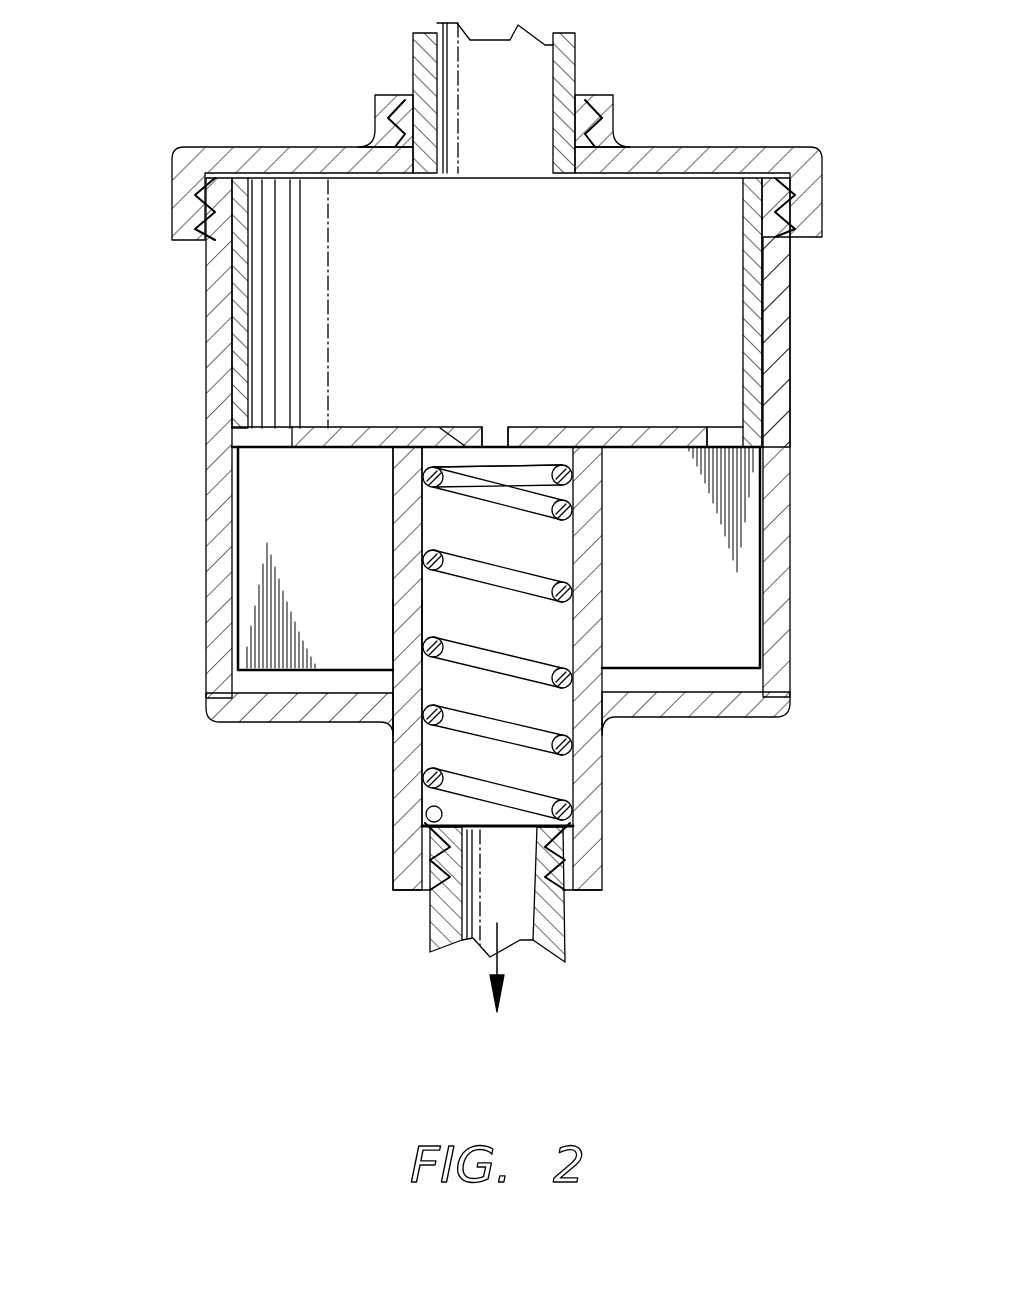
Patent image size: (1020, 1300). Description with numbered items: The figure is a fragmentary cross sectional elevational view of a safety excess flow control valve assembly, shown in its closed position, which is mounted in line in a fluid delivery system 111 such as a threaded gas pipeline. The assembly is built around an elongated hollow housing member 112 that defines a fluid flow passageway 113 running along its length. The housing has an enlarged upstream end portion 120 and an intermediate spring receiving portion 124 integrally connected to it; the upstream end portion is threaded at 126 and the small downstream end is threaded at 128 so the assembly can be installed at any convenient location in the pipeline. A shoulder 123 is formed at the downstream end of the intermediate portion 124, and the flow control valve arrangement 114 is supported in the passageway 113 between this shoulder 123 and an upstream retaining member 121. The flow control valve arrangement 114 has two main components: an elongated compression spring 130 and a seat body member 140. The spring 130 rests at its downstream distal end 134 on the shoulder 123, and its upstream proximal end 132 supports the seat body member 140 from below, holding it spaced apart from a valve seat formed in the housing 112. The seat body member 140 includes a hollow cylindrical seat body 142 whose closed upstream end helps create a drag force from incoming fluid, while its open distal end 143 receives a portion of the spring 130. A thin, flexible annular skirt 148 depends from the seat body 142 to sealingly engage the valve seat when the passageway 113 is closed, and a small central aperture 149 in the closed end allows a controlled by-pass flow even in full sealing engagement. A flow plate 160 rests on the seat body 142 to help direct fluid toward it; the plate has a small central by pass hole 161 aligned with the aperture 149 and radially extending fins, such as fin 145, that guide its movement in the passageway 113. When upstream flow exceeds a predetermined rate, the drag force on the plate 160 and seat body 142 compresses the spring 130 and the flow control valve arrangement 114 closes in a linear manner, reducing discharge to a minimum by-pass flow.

The fluid delivery system 111 is at (565, 66).
The threads 126 is at (593, 128).
The upstream retaining member 121 is at (238, 248).
The enlarged upstream end portion 120 is at (777, 310).
The by pass hole 161 is at (497, 436).
The flow plate 160 is at (627, 427).
The aperture 149 is at (452, 445).
The fin 145 is at (745, 437).
The proximal end of the spring 132 is at (430, 480).
The seat body 142 is at (425, 523).
The annular skirt 148 is at (407, 630).
The housing member 112 is at (791, 610).
The open distal end 143 is at (612, 680).
The seat body member 140 is at (617, 576).
The compression spring 130 is at (528, 675).
The flow control valve arrangement 114 is at (376, 741).
The intermediate spring receiving portion 124 is at (592, 828).
The distal end of the spring 134 is at (425, 815).
The threads 128 is at (560, 878).
The shoulder 123 is at (427, 818).
The fluid flow passageway 113 is at (500, 965).